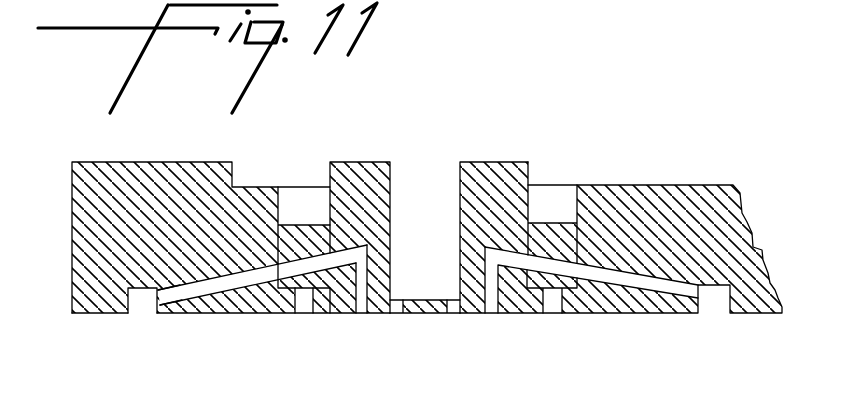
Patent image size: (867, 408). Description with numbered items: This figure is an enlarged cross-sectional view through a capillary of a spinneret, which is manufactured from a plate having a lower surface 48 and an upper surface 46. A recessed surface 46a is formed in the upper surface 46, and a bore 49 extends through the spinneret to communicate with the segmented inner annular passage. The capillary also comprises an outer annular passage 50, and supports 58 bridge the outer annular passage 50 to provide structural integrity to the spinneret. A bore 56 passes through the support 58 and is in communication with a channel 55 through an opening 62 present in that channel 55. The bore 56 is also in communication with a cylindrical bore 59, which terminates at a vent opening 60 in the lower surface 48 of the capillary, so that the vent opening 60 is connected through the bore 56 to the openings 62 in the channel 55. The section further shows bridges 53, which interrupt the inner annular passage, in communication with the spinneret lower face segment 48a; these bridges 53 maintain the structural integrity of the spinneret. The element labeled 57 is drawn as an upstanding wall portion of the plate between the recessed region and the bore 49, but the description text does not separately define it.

The upper surface 46 is at (125, 162).
The recessed surface 46a is at (265, 187).
The upstanding wall 57 is at (357, 178).
The bore 49 is at (422, 217).
The support 58 is at (545, 240).
The channel 55 is at (140, 308).
The opening 62 is at (152, 307).
The bore 56 is at (243, 305).
The cylindrical bore 59 is at (360, 278).
The vent opening 60 is at (362, 313).
The lower face segment 48a is at (422, 305).
The bridge 53 is at (452, 305).
The outer annular passage 50 is at (551, 298).
The lower surface 48 is at (662, 313).